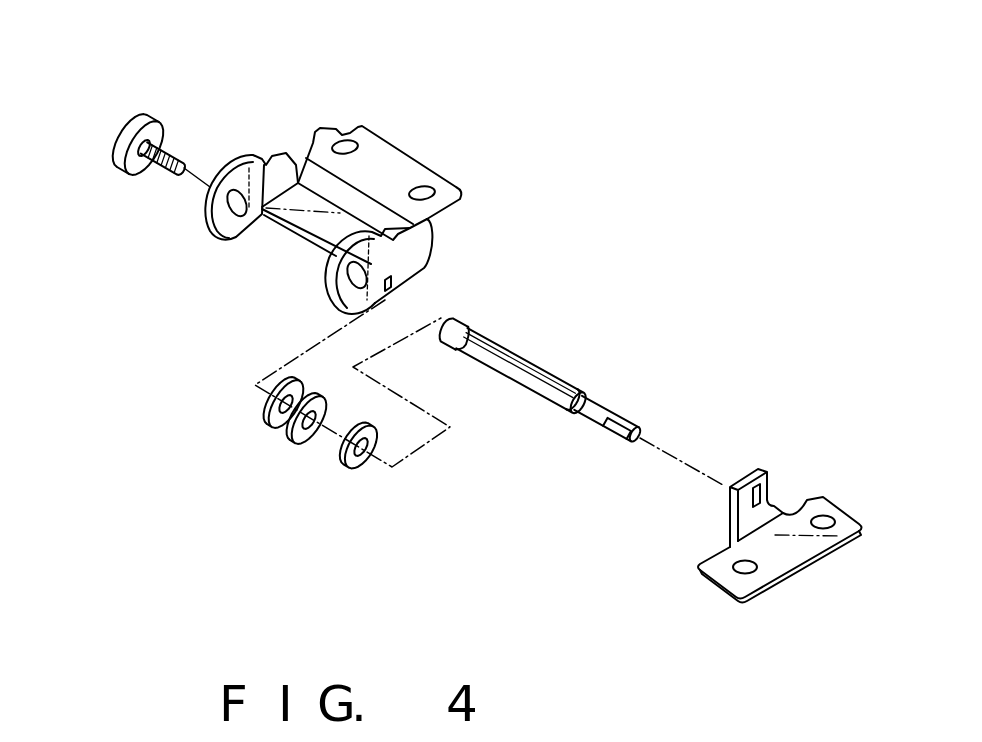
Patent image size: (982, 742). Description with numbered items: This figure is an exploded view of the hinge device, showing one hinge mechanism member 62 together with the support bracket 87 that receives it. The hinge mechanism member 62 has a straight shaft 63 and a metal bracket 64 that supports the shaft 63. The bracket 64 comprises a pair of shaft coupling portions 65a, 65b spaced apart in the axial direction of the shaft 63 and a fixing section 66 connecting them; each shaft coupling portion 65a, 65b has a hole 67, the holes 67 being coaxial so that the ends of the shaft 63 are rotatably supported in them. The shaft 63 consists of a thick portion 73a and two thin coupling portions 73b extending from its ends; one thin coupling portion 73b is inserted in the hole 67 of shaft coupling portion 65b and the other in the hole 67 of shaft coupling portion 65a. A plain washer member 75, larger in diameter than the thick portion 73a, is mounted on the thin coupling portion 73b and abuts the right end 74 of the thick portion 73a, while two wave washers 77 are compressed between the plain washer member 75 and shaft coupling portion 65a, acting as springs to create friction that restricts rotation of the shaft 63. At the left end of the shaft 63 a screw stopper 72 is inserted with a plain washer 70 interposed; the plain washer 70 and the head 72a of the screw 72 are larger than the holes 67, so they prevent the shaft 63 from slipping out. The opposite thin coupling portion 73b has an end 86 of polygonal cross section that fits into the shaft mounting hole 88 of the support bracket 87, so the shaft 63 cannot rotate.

The hinge mechanism member 62 is at (387, 187).
The shaft 63 is at (567, 395).
The bracket 64 is at (386, 150).
The shaft coupling portion 65a is at (262, 160).
The shaft coupling portion 65b is at (403, 258).
The fixing section 66 is at (358, 150).
The hole 67 is at (240, 224).
The plain washer 70 is at (115, 158).
The screw stopper 72 is at (172, 148).
The head of the screw 72a is at (120, 130).
The thick portion 73a is at (553, 375).
The thin coupling portion 73b is at (600, 405).
The right end of the thick portion 74 is at (463, 325).
The plain washer member 75 is at (355, 470).
The wave washers 77 is at (300, 435).
The end of the thin coupling portion 86 is at (615, 437).
The support bracket 87 is at (780, 513).
The shaft mounting hole 88 is at (762, 492).